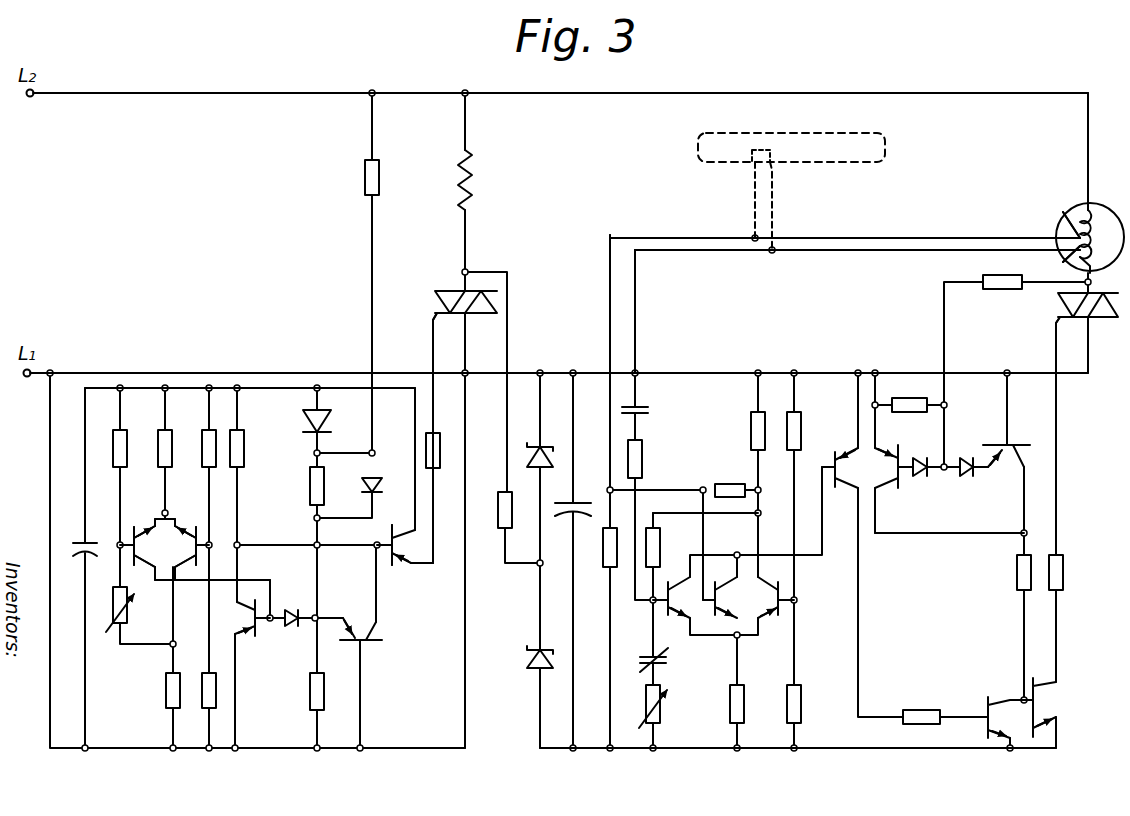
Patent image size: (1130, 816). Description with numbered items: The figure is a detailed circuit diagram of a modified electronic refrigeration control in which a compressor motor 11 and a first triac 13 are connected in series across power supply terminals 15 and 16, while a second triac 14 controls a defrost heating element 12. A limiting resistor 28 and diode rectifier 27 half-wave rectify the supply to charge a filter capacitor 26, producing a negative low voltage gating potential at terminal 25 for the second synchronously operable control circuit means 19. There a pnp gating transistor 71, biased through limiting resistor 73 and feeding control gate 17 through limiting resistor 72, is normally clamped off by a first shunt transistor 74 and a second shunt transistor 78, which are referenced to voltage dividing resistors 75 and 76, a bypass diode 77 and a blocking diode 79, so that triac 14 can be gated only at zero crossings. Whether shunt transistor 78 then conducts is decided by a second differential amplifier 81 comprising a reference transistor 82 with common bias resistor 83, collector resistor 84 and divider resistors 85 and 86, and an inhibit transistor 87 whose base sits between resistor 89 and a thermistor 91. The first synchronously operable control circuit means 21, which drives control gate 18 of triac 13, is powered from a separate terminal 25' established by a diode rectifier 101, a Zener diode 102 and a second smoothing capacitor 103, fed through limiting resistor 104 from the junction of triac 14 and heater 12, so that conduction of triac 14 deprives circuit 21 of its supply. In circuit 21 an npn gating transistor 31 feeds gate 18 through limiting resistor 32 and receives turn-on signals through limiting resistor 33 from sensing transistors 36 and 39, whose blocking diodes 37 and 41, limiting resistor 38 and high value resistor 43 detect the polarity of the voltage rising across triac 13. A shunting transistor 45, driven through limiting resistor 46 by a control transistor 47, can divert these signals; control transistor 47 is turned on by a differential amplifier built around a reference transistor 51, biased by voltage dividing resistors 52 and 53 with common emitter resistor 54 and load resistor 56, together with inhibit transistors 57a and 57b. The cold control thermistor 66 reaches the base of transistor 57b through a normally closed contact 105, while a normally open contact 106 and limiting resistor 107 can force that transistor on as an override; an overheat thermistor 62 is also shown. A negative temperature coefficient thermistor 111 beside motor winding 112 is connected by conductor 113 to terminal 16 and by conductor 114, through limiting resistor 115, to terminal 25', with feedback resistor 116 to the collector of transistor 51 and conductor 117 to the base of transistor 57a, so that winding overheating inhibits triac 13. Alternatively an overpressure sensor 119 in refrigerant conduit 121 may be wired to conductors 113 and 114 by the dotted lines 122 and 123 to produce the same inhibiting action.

The compressor motor 11 is at (1100, 204).
The defrost heating element 12 is at (473, 167).
The first triac 13 is at (1101, 317).
The second triac 14 is at (450, 291).
The power supply terminal 15 is at (181, 93).
The power supply terminal 16 is at (246, 373).
The control gate of triac 14 17 is at (431, 319).
The control gate of triac 13 18 is at (1058, 322).
The second synchronously operable control circuit means 19 is at (404, 521).
The first synchronously operable control circuit means 21 is at (930, 570).
The low voltage D.C. gating potential terminal 25 is at (250, 405).
The second low voltage direct current gating potential supply terminal 25' is at (798, 765).
The filter capacitor 26 is at (90, 541).
The diode rectifier 27 is at (331, 420).
The limiting resistor 28 is at (365, 184).
The gating transistor 31 is at (1030, 716).
The limiting resistor 32 is at (1063, 577).
The limiting resistor 33 is at (1017, 580).
The first pnp junction transistor 36 is at (1025, 445).
The blocking diode 37 is at (966, 477).
The limiting resistor 38 is at (1003, 289).
The second pnp junction transistor 39 is at (900, 489).
The blocking diode 41 is at (920, 477).
The high value resistor 43 is at (912, 394).
The shunting npn junction transistor 45 is at (986, 701).
The limiting resistor 46 is at (919, 710).
The control transistor 47 is at (838, 452).
The reference transistor 51 is at (769, 627).
The voltage dividing resistor 52 is at (796, 432).
The voltage dividing resistor 53 is at (802, 707).
The common emitter reference resistor 54 is at (730, 712).
The load resistor 56 is at (750, 430).
The overheat inhibit transistor 57a is at (712, 640).
The cold control inhibit transistor 57b is at (671, 626).
The overheat temperature sensing thermistor 62 is at (661, 545).
The cold control temperature sensitive resistor 66 is at (662, 711).
The gating transistor 71 is at (393, 566).
The limiting resistor 72 is at (436, 470).
The limiting resistor 73 is at (244, 452).
The first shunt transistor 74 is at (368, 645).
The voltage dividing resistor 75 is at (305, 702).
The voltage dividing resistor 76 is at (310, 490).
The bypass diode 77 is at (380, 486).
The second shunt transistor 78 is at (260, 637).
The blocking diode 79 is at (288, 610).
The second differential amplifier means 81 is at (170, 556).
The reference transistor 82 is at (196, 523).
The common bias resistor 83 is at (168, 437).
The voltage dividing resistor 84 is at (166, 690).
The voltage dividing resistor 85 is at (205, 463).
The voltage dividing resistor 86 is at (204, 707).
The inhibit transistor 87 is at (133, 523).
The voltage dividing resistor 89 is at (115, 437).
The temperature sensitive variable resistance thermistor 91 is at (113, 632).
The diode rectifier 101 is at (528, 656).
The Zener diode 102 is at (554, 446).
The second smoothing capacitor 103 is at (573, 503).
The limiting resistor 104 is at (500, 530).
The normally closed contact 105 is at (646, 655).
The normally open contact 106 is at (645, 407).
The limiting resistor 107 is at (642, 457).
The negative temperature coefficient temperature sensing thermistor 111 is at (1078, 240).
The motor winding 112 is at (1066, 214).
The conductor 113 is at (637, 324).
The conductor 114 is at (610, 298).
The limiting resistor 115 is at (606, 543).
The feedback resistor 116 is at (732, 484).
The conductor 117 is at (686, 512).
The overpressure sensor 119 is at (768, 155).
The conduit 121 is at (805, 133).
The dotted line conductor 122 is at (776, 202).
The dotted line conductor 123 is at (750, 202).